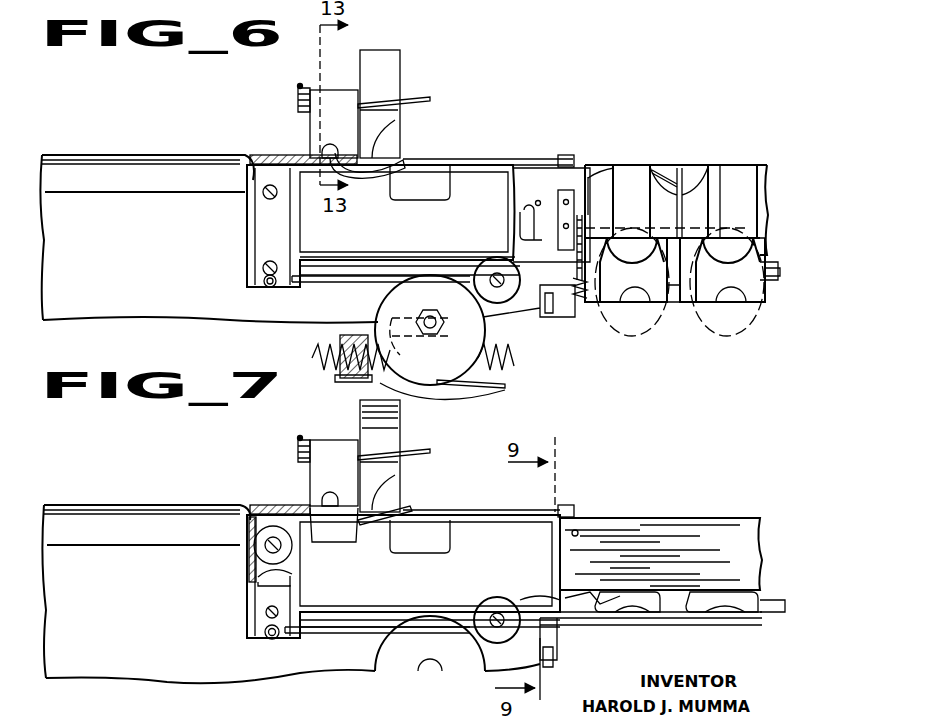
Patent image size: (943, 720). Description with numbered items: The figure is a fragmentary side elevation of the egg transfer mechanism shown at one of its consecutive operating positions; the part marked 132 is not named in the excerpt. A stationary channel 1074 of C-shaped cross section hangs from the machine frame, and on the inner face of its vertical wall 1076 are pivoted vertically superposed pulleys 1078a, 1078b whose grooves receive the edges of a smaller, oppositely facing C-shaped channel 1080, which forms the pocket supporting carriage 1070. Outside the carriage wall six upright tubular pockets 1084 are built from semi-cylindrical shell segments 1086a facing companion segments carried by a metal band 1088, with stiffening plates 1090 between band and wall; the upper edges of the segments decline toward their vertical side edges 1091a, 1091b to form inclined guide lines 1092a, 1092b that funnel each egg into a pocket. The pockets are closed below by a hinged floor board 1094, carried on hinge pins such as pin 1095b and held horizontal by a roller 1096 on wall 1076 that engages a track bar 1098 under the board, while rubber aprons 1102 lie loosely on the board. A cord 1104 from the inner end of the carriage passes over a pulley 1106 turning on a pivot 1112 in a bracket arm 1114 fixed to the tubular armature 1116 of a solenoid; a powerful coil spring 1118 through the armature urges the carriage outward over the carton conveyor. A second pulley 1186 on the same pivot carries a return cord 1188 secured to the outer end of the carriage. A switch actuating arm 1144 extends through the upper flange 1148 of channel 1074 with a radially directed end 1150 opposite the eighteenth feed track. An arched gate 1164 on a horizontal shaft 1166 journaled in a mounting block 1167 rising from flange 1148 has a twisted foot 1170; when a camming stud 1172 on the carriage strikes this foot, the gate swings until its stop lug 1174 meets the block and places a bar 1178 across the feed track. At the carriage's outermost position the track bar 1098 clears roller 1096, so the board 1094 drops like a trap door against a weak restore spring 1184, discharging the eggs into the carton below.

In FIG. 6, the cartridge assembly 132 is at (134, 134).
In FIG. 7, the cartridge assembly 132 is at (190, 488).
In FIG. 6, the channel 1074 is at (111, 152).
In FIG. 7, the channel 1074 is at (90, 505).
In FIG. 6, the vertical wall 1076 is at (142, 261).
In FIG. 7, the vertical wall 1076 is at (150, 594).
In FIG. 6, the upper flange 1148 is at (276, 157).
In FIG. 7, the upper flange 1148 is at (300, 507).
In FIG. 6, the mounting block 1167 is at (316, 122).
In FIG. 7, the mounting block 1167 is at (320, 474).
In FIG. 6, the arched gate 1164 is at (396, 65).
In FIG. 7, the arched gate 1164 is at (372, 422).
In FIG. 6, the bar 1178 is at (424, 96).
In FIG. 7, the bar 1178 is at (405, 452).
In FIG. 6, the horizontal shaft 1166 is at (402, 106).
In FIG. 7, the horizontal shaft 1166 is at (395, 462).
In FIG. 6, the foot 1170 is at (378, 152).
In FIG. 7, the foot 1170 is at (400, 500).
In FIG. 6, the radially directed end portion 1150 is at (386, 160).
In FIG. 7, the radially directed end portion 1150 is at (397, 512).
In FIG. 6, the rotary actuating arm 1144 is at (420, 183).
In FIG. 7, the rotary actuating arm 1144 is at (400, 516).
In FIG. 6, the camming stud 1172 is at (563, 157).
In FIG. 7, the camming stud 1172 is at (548, 510).
In FIG. 6, the guide line 1092b is at (596, 176).
In FIG. 6, the tubular pockets 1084 is at (608, 180).
In FIG. 6, the vertical side edge 1091a is at (658, 161).
In FIG. 6, the guide line 1092a is at (660, 170).
In FIG. 6, the pocket supporting carriage 1070 is at (744, 183).
In FIG. 7, the pocket supporting carriage 1070 is at (730, 521).
In FIG. 6, the vertical side edge 1091b is at (551, 224).
In FIG. 6, the semi-cylindrical shell segment 1086a is at (670, 193).
In FIG. 6, the plates 1090 is at (652, 229).
In FIG. 6, the metal band 1088 is at (450, 229).
In FIG. 7, the metal band 1088 is at (460, 579).
In FIG. 6, the channel 1080 is at (296, 241).
In FIG. 7, the channel 1080 is at (371, 614).
In FIG. 6, the roller 1096 is at (491, 272).
In FIG. 7, the roller 1096 is at (491, 618).
In FIG. 6, the hinge pin 1095b is at (543, 236).
In FIG. 6, the aprons 1102 is at (640, 291).
In FIG. 6, the cord 1104 is at (369, 283).
In FIG. 7, the cord 1104 is at (366, 630).
In FIG. 6, the pulley 1106 is at (386, 311).
In FIG. 7, the pulley 1106 is at (386, 658).
In FIG. 6, the pivot 1112 is at (447, 325).
In FIG. 7, the pivot 1112 is at (430, 670).
In FIG. 6, the tubular armature 1116 is at (332, 346).
In FIG. 6, the coil spring 1118 is at (322, 358).
In FIG. 6, the bracket arm 1114 is at (394, 352).
In FIG. 6, the track bar 1098 is at (523, 298).
In FIG. 7, the track bar 1098 is at (528, 610).
In FIG. 6, the restore spring 1184 is at (583, 303).
In FIG. 7, the restore spring 1184 is at (614, 601).
In FIG. 6, the elongated board 1094 is at (684, 312).
In FIG. 7, the elongated board 1094 is at (690, 602).
In FIG. 6, the cord 1188 is at (500, 388).
In FIG. 7, the cord 1188 is at (612, 624).
In FIG. 6, the pulley 1186 is at (450, 387).
In FIG. 7, the stop lug 1174 is at (366, 478).
In FIG. 7, the pulley 1078a is at (290, 551).
In FIG. 7, the pulley 1078b is at (288, 575).